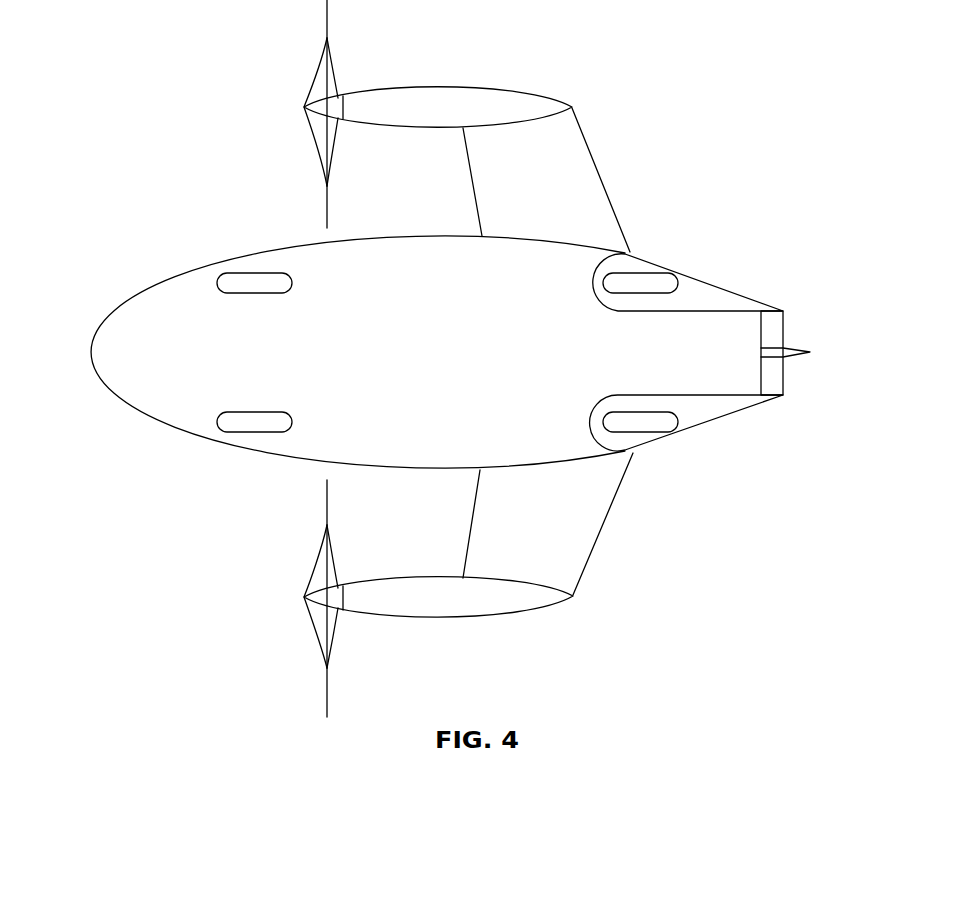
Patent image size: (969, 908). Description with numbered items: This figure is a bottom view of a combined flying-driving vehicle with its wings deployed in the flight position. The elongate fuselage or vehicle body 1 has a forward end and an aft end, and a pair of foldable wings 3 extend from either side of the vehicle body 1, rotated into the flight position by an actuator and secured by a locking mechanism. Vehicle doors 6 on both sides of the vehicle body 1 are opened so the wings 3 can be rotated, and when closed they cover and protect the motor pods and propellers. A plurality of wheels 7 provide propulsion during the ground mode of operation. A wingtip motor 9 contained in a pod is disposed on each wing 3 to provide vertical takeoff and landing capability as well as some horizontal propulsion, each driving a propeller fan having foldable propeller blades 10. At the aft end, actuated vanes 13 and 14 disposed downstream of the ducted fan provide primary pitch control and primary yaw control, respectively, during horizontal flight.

The vehicle body 1 is at (115, 382).
The folding wings 3 is at (590, 157).
The vehicle doors 6 is at (325, 448).
The wheels 7 is at (678, 422).
The wingtip motor 9 is at (378, 103).
The foldable propeller blades 10 is at (330, 643).
The pitch vane 13 is at (773, 333).
The yaw vane 14 is at (810, 352).